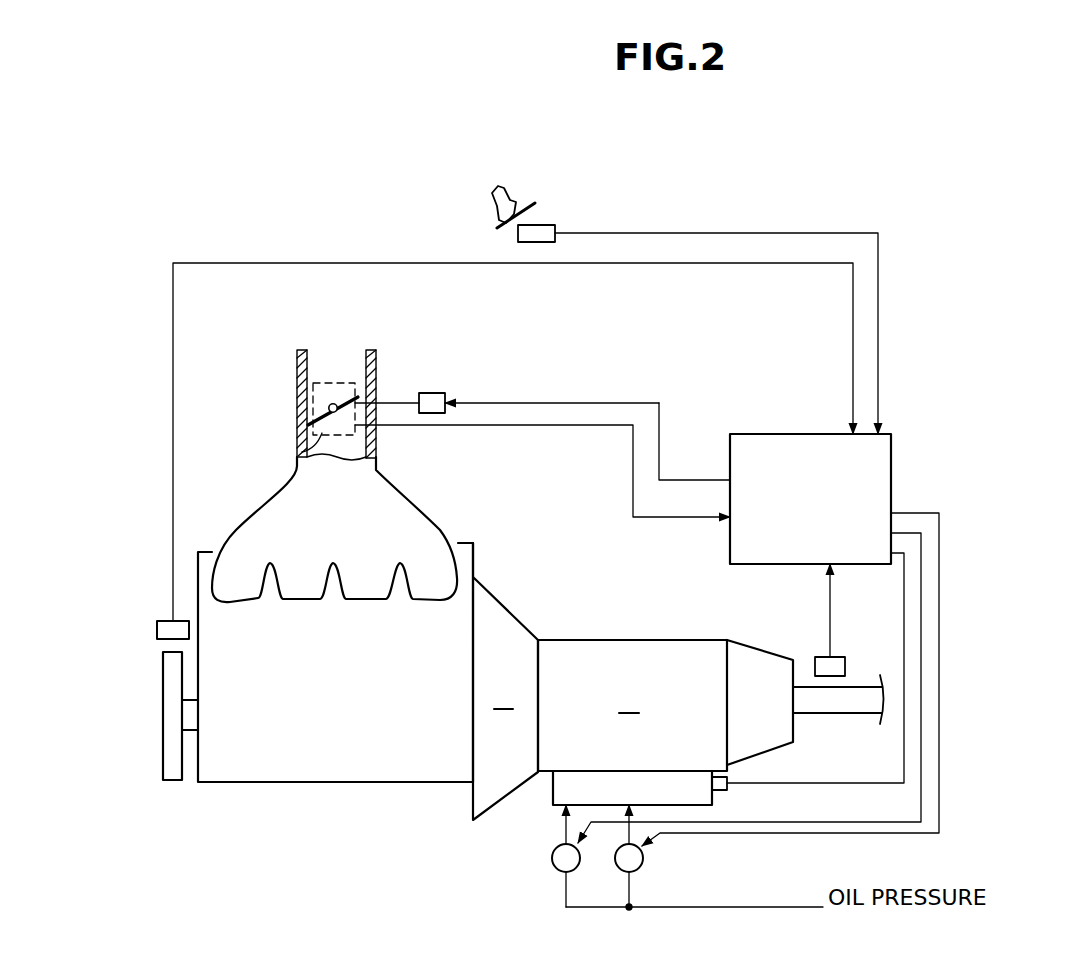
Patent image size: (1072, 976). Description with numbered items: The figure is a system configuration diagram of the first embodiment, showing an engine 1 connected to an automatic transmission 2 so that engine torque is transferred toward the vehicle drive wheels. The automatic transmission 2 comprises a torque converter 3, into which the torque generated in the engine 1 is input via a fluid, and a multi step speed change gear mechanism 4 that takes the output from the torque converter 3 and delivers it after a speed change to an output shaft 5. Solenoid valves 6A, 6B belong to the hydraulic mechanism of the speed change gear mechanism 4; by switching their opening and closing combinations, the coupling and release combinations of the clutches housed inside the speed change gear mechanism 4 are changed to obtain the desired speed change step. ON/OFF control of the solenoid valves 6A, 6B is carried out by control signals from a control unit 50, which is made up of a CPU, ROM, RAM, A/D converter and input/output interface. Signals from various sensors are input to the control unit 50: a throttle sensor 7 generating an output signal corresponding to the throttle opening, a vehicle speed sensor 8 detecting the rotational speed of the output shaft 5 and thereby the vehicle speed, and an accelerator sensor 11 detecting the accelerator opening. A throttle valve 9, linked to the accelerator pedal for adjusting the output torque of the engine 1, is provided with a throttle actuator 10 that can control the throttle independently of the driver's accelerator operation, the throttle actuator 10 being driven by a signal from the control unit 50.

The engine 1 is at (450, 527).
The automatic transmission 2 is at (688, 681).
The torque converter 3 is at (505, 681).
The speed change gear mechanism 4 is at (632, 627).
The output shaft 5 is at (845, 713).
The solenoid valve 6A is at (552, 864).
The solenoid valve 6B is at (643, 860).
The throttle sensor 7 is at (338, 383).
The vehicle speed sensor 8 is at (848, 660).
The throttle valve 9 is at (302, 452).
The throttle actuator 10 is at (433, 393).
The accelerator sensor 11 is at (540, 225).
The control unit 50 is at (893, 465).